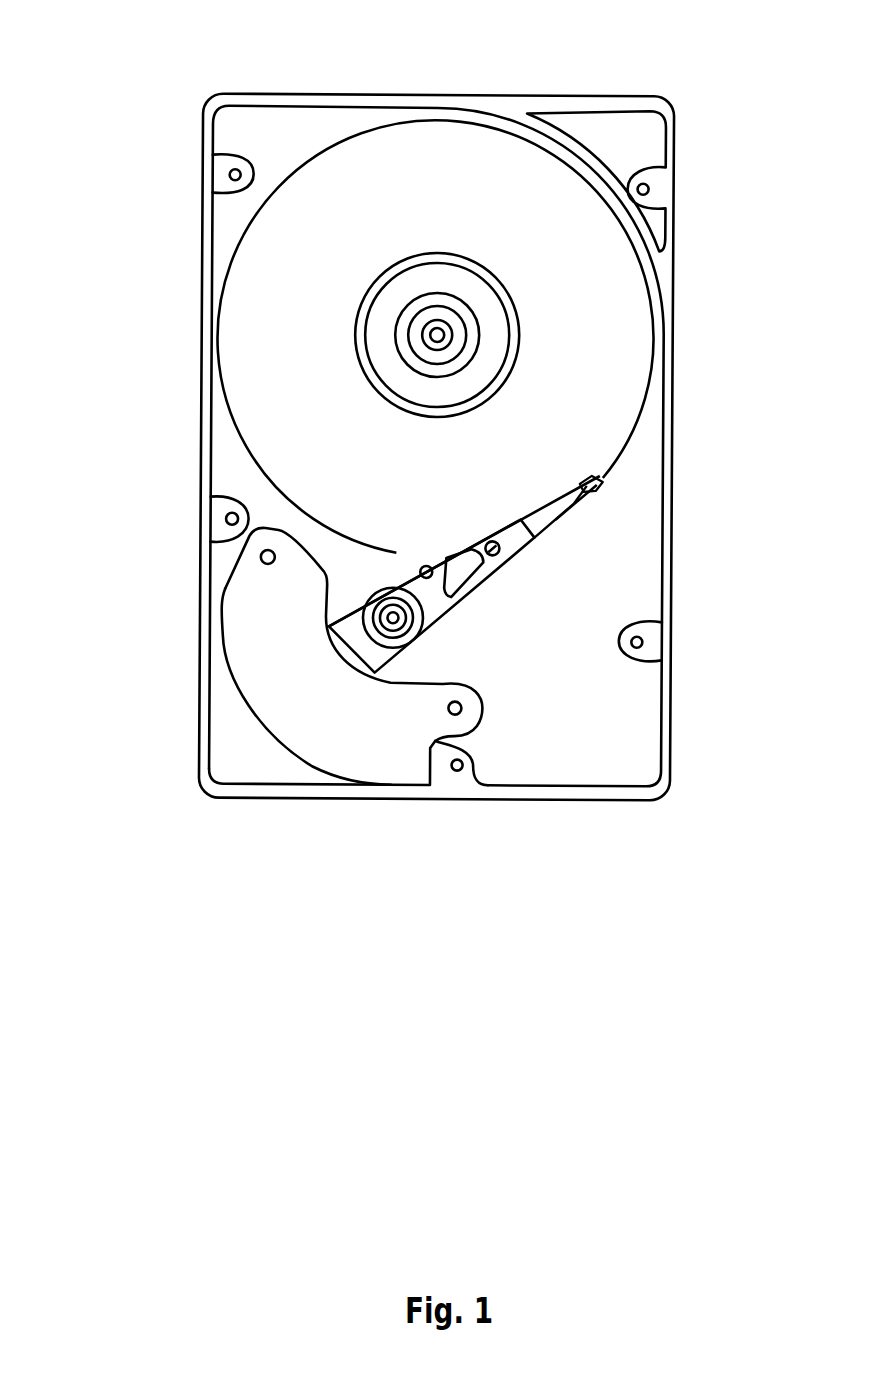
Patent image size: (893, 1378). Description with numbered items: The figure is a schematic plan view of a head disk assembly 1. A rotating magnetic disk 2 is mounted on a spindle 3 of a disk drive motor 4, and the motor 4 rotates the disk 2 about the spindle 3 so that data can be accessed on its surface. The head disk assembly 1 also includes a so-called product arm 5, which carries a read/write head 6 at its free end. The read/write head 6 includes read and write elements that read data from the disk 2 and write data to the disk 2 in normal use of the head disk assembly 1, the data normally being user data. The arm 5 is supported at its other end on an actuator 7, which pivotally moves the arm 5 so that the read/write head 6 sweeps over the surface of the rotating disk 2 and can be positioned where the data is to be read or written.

The head disk assembly 1 is at (203, 137).
The magnetic disk 2 is at (343, 172).
The spindle 3 is at (432, 321).
The disk drive motor 4 is at (450, 252).
The product arm 5 is at (583, 505).
The read/write head 6 is at (606, 478).
The actuator 7 is at (431, 627).